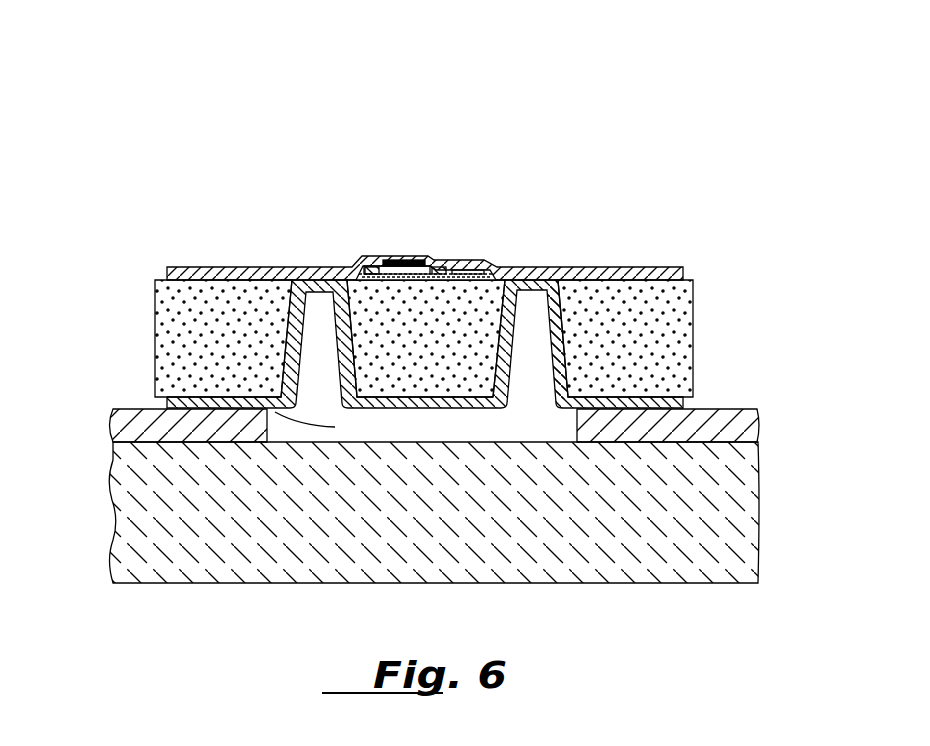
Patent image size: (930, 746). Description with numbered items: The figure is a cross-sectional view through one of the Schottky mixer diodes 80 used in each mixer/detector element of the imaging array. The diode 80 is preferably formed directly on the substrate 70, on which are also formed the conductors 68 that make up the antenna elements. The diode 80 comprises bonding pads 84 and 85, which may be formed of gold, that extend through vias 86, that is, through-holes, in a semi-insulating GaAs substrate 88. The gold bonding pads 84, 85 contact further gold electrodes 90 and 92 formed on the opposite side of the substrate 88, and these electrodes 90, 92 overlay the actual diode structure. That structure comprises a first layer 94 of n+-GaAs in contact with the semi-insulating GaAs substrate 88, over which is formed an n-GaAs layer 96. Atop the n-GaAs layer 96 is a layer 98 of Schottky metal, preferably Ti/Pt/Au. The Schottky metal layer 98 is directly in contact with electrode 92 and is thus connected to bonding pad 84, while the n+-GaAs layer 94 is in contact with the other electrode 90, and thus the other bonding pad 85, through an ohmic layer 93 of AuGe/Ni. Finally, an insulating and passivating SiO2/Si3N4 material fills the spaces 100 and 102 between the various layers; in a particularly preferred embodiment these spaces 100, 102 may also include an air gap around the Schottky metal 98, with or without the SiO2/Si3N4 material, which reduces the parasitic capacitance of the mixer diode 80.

The conductors 68 is at (132, 425).
The substrate 70 is at (155, 505).
The mixer diode 80 is at (743, 244).
The bonding pad 84 is at (292, 397).
The bonding pad 85 is at (558, 380).
The vias 86 is at (550, 345).
The semi-insulating GaAs substrate 88 is at (687, 330).
The gold electrode 90 is at (630, 267).
The gold electrode 92 is at (167, 270).
The ohmic layer 93 is at (743, 145).
The n+-GaAs layer 94 is at (663, 103).
The n-GaAs layer 96 is at (622, 23).
The Schottky metal layer 98 is at (390, 258).
The space 100 is at (365, 256).
The space 102 is at (433, 262).